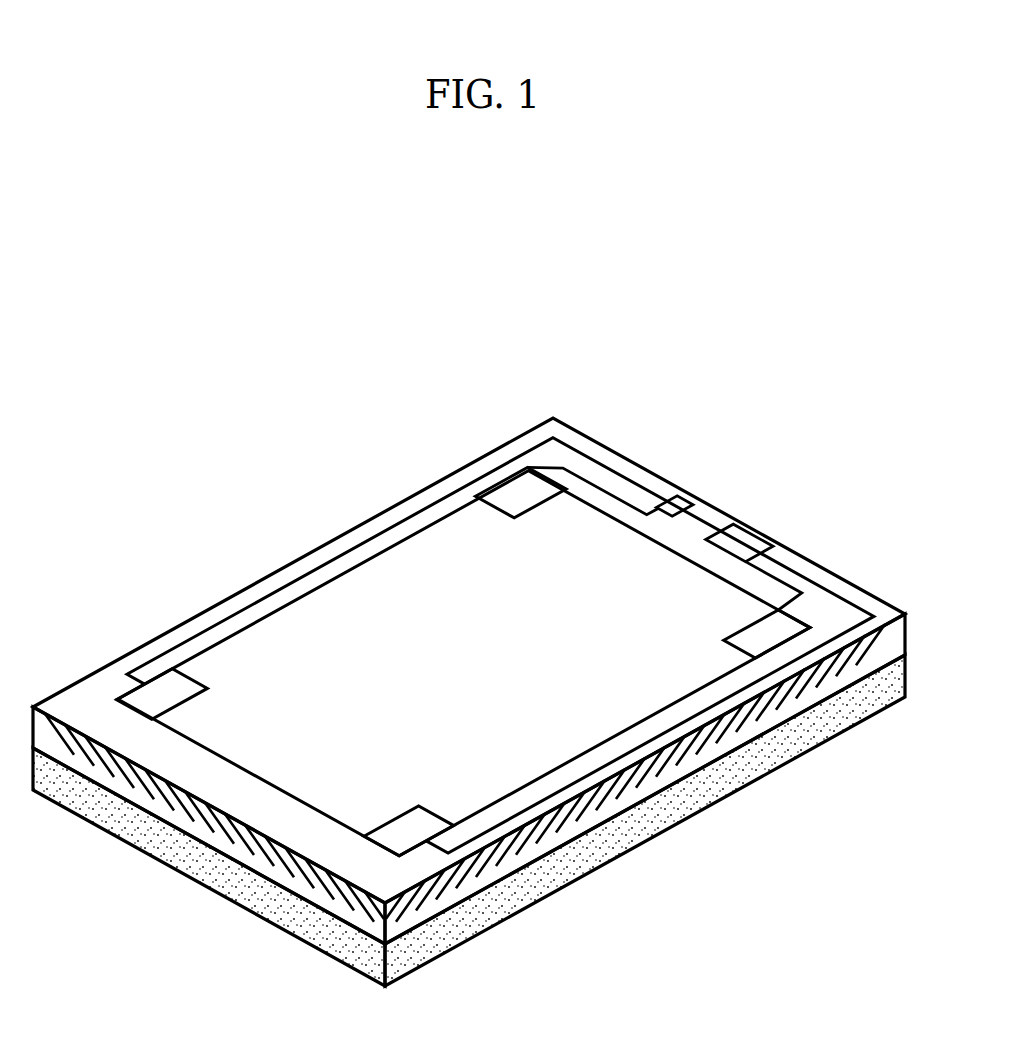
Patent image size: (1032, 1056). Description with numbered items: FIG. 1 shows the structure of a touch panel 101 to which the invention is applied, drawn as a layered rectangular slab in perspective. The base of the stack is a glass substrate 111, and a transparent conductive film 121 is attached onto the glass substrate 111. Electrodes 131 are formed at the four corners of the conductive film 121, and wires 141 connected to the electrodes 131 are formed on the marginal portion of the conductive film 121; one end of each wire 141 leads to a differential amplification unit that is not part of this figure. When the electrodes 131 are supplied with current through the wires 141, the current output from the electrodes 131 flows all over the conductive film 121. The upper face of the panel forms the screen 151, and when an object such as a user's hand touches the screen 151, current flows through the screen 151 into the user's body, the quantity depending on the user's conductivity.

The touch panel 101 is at (195, 418).
The glass substrate 111 is at (480, 910).
The transparent conductive film 121 is at (563, 823).
The electrodes 131 is at (527, 492).
The wires 141 is at (780, 553).
The screen 151 is at (350, 592).